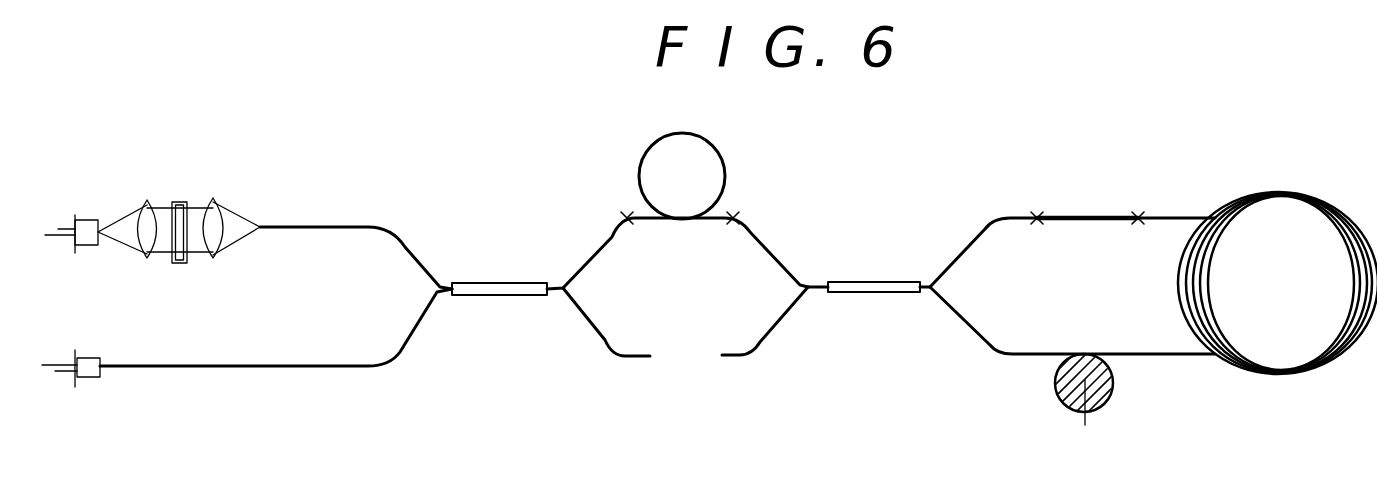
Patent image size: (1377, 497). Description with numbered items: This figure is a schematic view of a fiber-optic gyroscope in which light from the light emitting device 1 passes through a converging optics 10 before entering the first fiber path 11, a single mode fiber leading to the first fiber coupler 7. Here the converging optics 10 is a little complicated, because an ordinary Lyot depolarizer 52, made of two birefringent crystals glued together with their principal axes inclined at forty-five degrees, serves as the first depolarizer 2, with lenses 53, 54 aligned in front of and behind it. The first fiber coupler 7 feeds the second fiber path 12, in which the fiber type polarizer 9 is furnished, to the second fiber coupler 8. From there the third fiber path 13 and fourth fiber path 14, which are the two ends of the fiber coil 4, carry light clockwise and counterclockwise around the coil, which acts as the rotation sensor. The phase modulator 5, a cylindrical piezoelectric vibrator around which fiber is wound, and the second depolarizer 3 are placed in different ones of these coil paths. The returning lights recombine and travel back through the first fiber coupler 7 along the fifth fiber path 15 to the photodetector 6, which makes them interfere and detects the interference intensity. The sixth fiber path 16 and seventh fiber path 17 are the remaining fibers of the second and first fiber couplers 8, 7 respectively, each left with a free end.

The light emitting device 1 is at (95, 228).
The first depolarizer 2 is at (165, 279).
The second depolarizer 3 is at (1135, 212).
The fiber coil 4 is at (1332, 358).
The phase modulator 5 is at (1097, 400).
The photodetector 6 is at (90, 378).
The first fiber coupler 7 is at (512, 283).
The second fiber coupler 8 is at (875, 282).
The fiber type polarizer 9 is at (721, 187).
The converging optics 10 is at (230, 187).
The first fiber path 11 is at (446, 292).
The second fiber path 12 is at (797, 288).
The third fiber path 13 is at (1193, 240).
The fourth fiber path 14 is at (1193, 343).
The fifth fiber path 15 is at (447, 297).
The sixth fiber path 16 is at (807, 289).
The seventh fiber path 17 is at (563, 290).
The Lyot depolarizer 52 is at (190, 240).
The lens 53 is at (147, 243).
The lens 54 is at (214, 228).